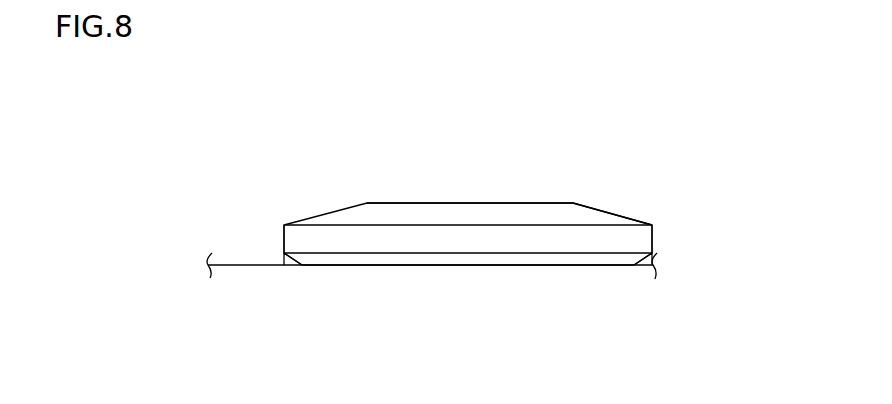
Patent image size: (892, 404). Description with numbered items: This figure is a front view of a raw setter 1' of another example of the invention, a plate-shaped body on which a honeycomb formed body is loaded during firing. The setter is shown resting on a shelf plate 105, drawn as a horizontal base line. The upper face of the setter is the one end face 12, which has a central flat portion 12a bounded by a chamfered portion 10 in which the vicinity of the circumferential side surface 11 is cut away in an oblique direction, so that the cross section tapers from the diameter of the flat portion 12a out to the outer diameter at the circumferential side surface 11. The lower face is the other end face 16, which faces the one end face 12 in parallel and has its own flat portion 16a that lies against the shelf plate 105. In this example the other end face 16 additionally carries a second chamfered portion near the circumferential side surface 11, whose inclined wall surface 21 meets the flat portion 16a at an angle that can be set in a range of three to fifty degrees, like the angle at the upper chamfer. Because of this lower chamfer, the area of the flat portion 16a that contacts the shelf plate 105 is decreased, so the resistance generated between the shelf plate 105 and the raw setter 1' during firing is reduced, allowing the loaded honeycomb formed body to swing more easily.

The raw setter 1' is at (474, 165).
The chamfered portion 10 is at (423, 208).
The circumferential side surface 11 is at (645, 235).
The one end face 12 is at (484, 118).
The flat portion 12a is at (508, 203).
The other end face 16 is at (603, 318).
The flat portion 16a is at (530, 267).
The inclined wall surface 21 is at (654, 261).
The shelf plate 105 is at (218, 262).